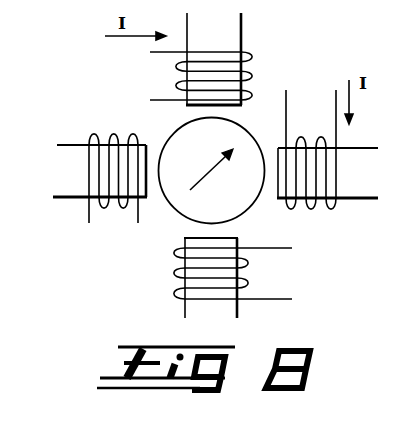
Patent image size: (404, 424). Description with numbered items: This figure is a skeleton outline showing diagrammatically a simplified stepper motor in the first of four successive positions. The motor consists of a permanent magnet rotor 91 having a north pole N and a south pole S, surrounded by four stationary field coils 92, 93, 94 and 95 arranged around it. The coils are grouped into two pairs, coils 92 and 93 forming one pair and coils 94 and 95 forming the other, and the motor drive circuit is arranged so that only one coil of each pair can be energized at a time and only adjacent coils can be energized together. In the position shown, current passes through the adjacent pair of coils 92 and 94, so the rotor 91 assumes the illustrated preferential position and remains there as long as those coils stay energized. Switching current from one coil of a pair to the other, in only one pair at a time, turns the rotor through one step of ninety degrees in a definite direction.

The permanent magnet rotor 91 is at (241, 124).
The field coil 92 is at (242, 27).
The field coil 93 is at (185, 315).
The field coil 94 is at (342, 200).
The field coil 95 is at (84, 143).